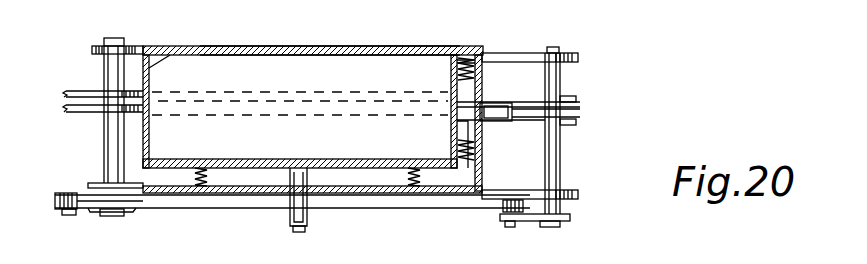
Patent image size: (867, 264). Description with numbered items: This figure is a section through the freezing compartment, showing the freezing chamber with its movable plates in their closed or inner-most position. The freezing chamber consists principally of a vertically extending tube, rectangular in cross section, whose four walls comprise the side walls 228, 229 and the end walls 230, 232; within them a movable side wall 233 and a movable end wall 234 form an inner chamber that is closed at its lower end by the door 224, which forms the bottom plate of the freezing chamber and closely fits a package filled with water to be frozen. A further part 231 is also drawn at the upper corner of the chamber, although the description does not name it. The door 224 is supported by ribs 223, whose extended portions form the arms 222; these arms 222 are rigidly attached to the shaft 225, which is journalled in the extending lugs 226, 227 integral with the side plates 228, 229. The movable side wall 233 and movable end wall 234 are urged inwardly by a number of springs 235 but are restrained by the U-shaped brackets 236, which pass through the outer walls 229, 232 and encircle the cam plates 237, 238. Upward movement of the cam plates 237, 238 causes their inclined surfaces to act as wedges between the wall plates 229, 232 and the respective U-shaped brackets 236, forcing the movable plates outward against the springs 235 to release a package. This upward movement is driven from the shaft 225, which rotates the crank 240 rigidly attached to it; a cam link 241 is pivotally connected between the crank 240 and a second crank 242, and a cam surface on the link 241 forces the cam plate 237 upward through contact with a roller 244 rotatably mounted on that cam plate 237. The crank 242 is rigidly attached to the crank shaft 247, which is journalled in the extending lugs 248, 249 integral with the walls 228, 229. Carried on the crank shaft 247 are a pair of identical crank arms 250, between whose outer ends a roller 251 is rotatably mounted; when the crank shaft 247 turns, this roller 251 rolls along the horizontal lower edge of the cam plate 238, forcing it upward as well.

The arms 222 is at (66, 108).
The ribs 223 is at (290, 106).
The door 224 is at (346, 62).
The shaft 225 is at (104, 142).
The extending lug 226 is at (96, 46).
The extending lug 227 is at (96, 184).
The side wall 228 is at (260, 50).
The side wall 229 is at (240, 186).
The end wall 230 is at (158, 56).
The upper spacer 231 is at (450, 68).
The outer wall 232 is at (508, 47).
The movable side wall 233 is at (260, 166).
The movable end wall 234 is at (451, 147).
The springs 235 is at (458, 72).
The U-shaped brackets 236 is at (485, 104).
The cam plate 237 is at (293, 229).
The cam plate 238 is at (578, 113).
The crank 240 is at (82, 210).
The cam link 241 is at (150, 208).
The crank 242 is at (532, 221).
The roller 244 is at (308, 208).
The crank shaft 247 is at (560, 162).
The extending lug 248 is at (590, 52).
The extending lug 249 is at (575, 192).
The crank arms 250 is at (578, 100).
The roller 251 is at (512, 124).